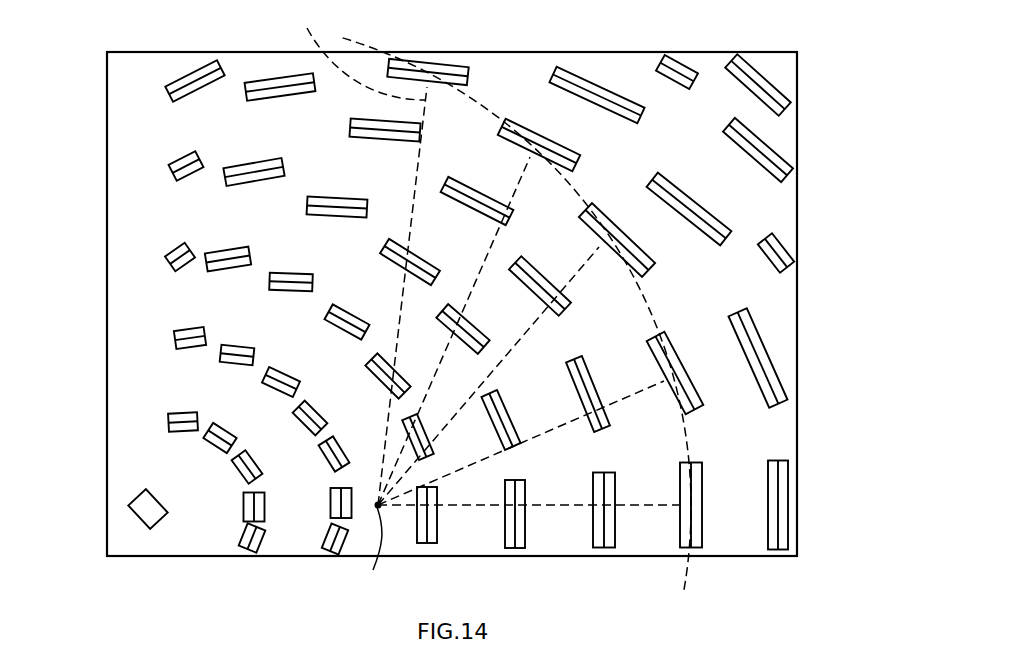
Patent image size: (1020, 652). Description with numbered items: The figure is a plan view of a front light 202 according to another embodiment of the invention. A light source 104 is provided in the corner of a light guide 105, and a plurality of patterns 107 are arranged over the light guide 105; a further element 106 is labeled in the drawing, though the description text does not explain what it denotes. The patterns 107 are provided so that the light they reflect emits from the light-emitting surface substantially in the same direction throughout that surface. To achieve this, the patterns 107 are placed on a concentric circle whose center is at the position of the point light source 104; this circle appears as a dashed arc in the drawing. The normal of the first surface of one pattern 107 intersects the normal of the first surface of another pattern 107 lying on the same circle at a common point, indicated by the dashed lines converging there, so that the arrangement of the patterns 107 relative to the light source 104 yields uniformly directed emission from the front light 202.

The light source 104 is at (148, 518).
The light guide 105 is at (797, 305).
The reflective prism elements 106 is at (775, 208).
The patterns 107 is at (168, 258).
The front light 202 is at (293, 623).